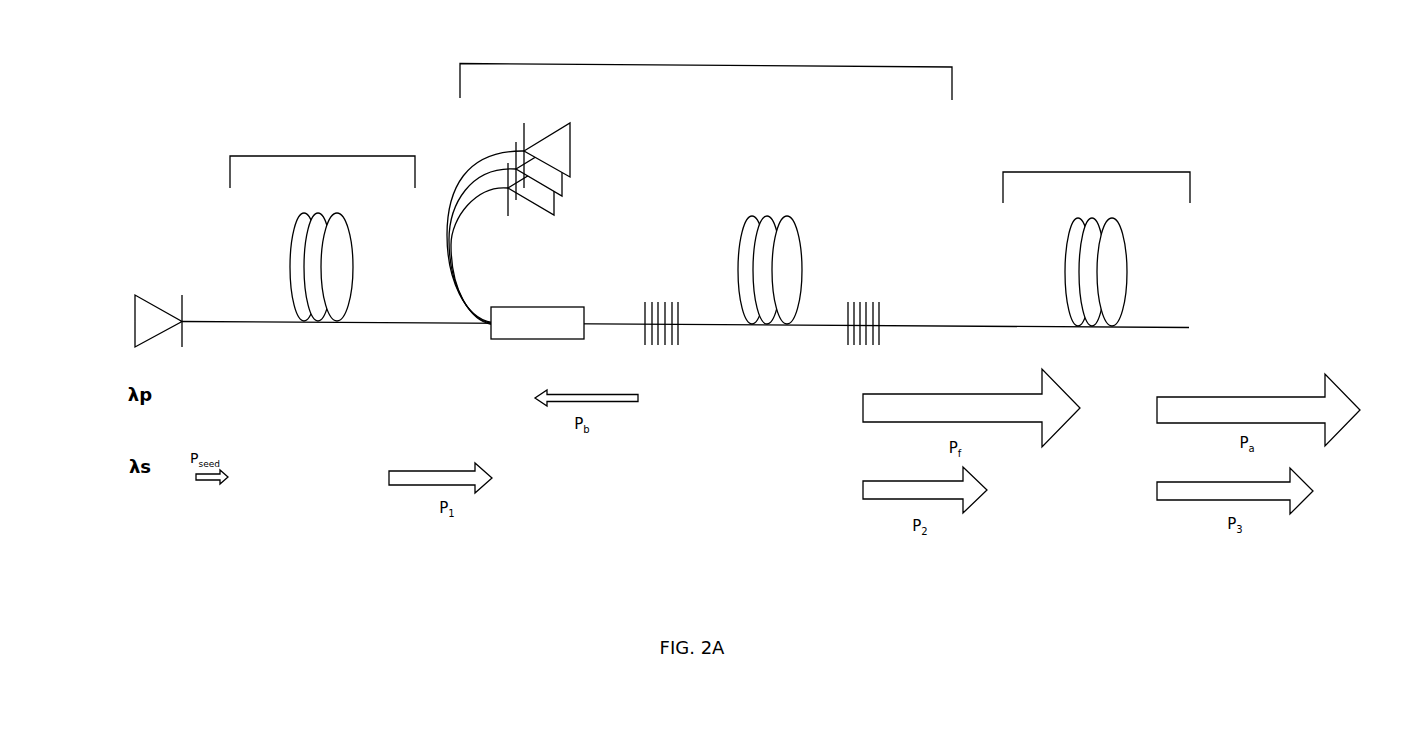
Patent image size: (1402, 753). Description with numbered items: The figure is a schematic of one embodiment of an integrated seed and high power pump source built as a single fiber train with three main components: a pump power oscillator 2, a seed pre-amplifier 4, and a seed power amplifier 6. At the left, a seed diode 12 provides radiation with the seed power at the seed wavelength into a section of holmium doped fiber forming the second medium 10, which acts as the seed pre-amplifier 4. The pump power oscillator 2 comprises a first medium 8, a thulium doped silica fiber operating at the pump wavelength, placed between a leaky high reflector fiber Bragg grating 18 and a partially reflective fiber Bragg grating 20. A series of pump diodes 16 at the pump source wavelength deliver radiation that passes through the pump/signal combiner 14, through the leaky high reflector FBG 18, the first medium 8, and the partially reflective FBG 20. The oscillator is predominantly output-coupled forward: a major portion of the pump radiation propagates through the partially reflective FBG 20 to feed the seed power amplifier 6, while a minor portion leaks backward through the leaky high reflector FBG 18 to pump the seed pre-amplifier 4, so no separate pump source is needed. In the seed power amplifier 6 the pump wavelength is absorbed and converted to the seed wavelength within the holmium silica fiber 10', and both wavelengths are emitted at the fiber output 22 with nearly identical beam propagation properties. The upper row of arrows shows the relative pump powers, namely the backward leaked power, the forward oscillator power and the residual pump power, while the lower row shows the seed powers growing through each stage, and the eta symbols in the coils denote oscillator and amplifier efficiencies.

The pump power oscillator 2 is at (706, 62).
The seed pre-amplifier 4 is at (322, 153).
The seed power amplifier 6 is at (1096, 168).
The first medium 8 is at (770, 256).
The second medium 10 is at (321, 253).
The second medium 10' is at (1096, 258).
The seed diode 12 is at (158, 309).
The pump/signal combiner 14 is at (537, 315).
The pump diodes 16 is at (540, 211).
The leaky high reflector fiber Bragg grating 18 is at (661, 330).
The partially reflective fiber Bragg grating 20 is at (863, 329).
The fiber output 22 is at (718, 316).